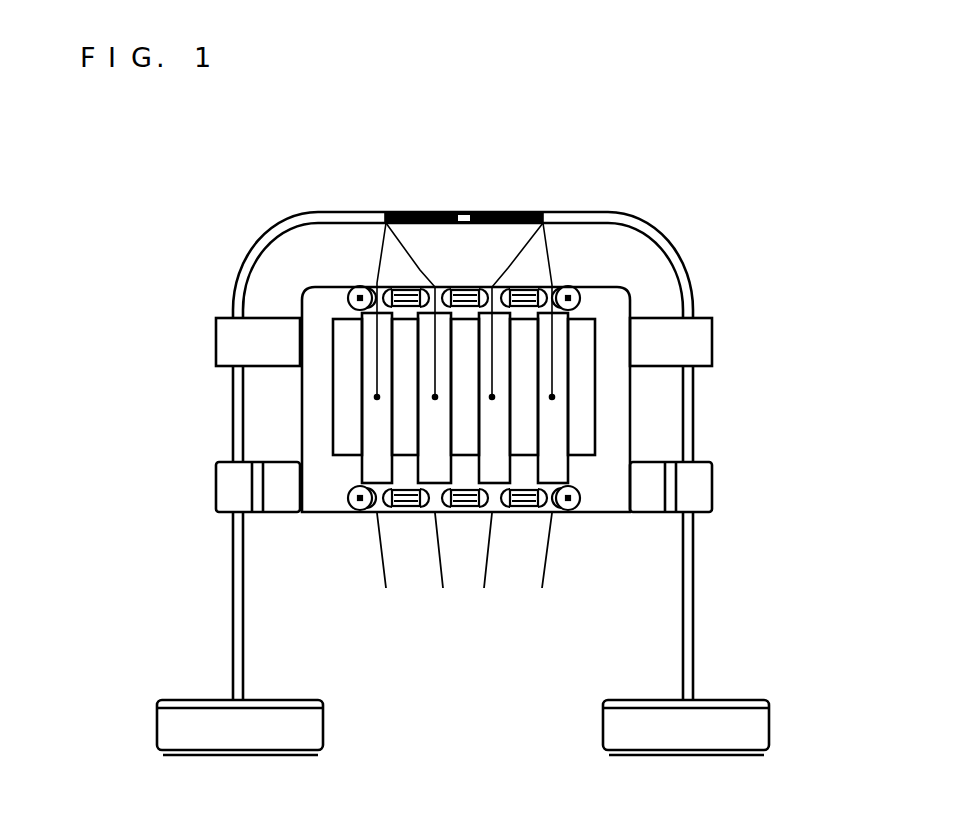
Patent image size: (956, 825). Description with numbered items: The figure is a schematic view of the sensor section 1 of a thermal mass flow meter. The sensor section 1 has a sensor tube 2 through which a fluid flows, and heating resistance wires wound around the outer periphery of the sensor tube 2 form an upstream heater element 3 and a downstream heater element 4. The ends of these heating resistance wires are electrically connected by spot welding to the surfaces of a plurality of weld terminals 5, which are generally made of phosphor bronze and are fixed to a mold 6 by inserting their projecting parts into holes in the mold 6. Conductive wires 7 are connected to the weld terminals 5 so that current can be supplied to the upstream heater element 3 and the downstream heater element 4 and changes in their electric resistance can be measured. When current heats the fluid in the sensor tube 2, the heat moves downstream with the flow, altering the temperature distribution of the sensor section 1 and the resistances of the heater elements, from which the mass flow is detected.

The sensor section 1 is at (426, 417).
The sensor tube 2 is at (449, 448).
The upstream heater element 3 is at (404, 240).
The downstream heater element 4 is at (508, 240).
The weld terminals 5 is at (312, 398).
The mold 6 is at (553, 399).
The conductive wires 7 is at (464, 617).